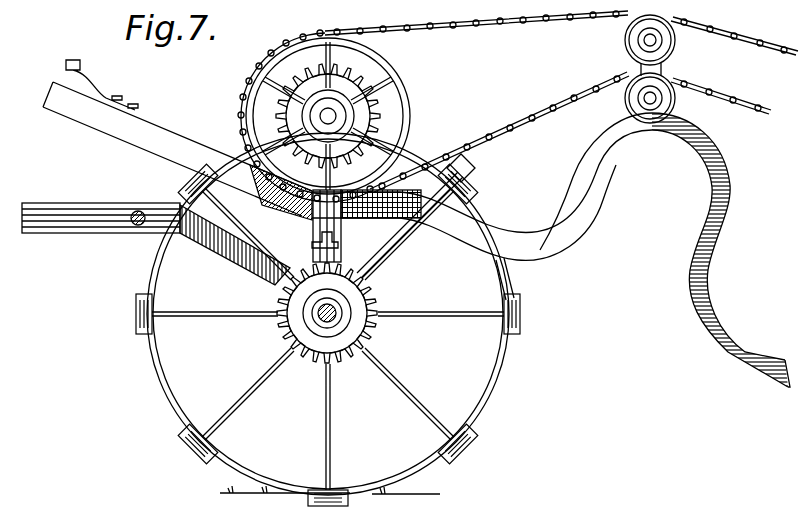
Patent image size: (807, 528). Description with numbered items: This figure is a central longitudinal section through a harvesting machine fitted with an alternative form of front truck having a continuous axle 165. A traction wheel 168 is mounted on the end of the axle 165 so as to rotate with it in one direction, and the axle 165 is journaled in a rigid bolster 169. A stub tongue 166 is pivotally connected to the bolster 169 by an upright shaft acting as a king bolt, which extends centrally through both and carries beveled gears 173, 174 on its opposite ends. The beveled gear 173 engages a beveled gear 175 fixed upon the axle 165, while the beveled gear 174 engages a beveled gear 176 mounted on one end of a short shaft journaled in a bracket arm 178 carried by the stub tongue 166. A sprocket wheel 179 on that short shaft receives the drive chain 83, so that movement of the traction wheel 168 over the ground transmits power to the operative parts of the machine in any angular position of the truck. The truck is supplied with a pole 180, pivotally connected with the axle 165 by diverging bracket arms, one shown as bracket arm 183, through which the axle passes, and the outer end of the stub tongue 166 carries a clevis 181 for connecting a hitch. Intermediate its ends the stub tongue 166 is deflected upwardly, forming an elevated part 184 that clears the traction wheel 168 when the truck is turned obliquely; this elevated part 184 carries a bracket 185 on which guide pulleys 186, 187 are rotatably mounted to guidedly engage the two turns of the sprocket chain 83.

The drive chain 83 is at (500, 136).
The continuous axle 165 is at (310, 346).
The stub tongue 166 is at (728, 357).
The traction wheel 168 is at (486, 396).
The rigid bolster 169 is at (374, 270).
The beveled gear 173 is at (360, 282).
The beveled gear 174 is at (284, 198).
The beveled gear 175 is at (368, 322).
The beveled gear 176 is at (264, 90).
The bracket arm 178 is at (336, 78).
The sprocket wheel 179 is at (396, 90).
The pole 180 is at (80, 235).
The clevis 181 is at (93, 93).
The bracket arm 183 is at (230, 264).
The elevated part 184 is at (684, 168).
The bracket 185 is at (668, 70).
The guide pulley 186 is at (620, 112).
The guide pulley 187 is at (628, 41).